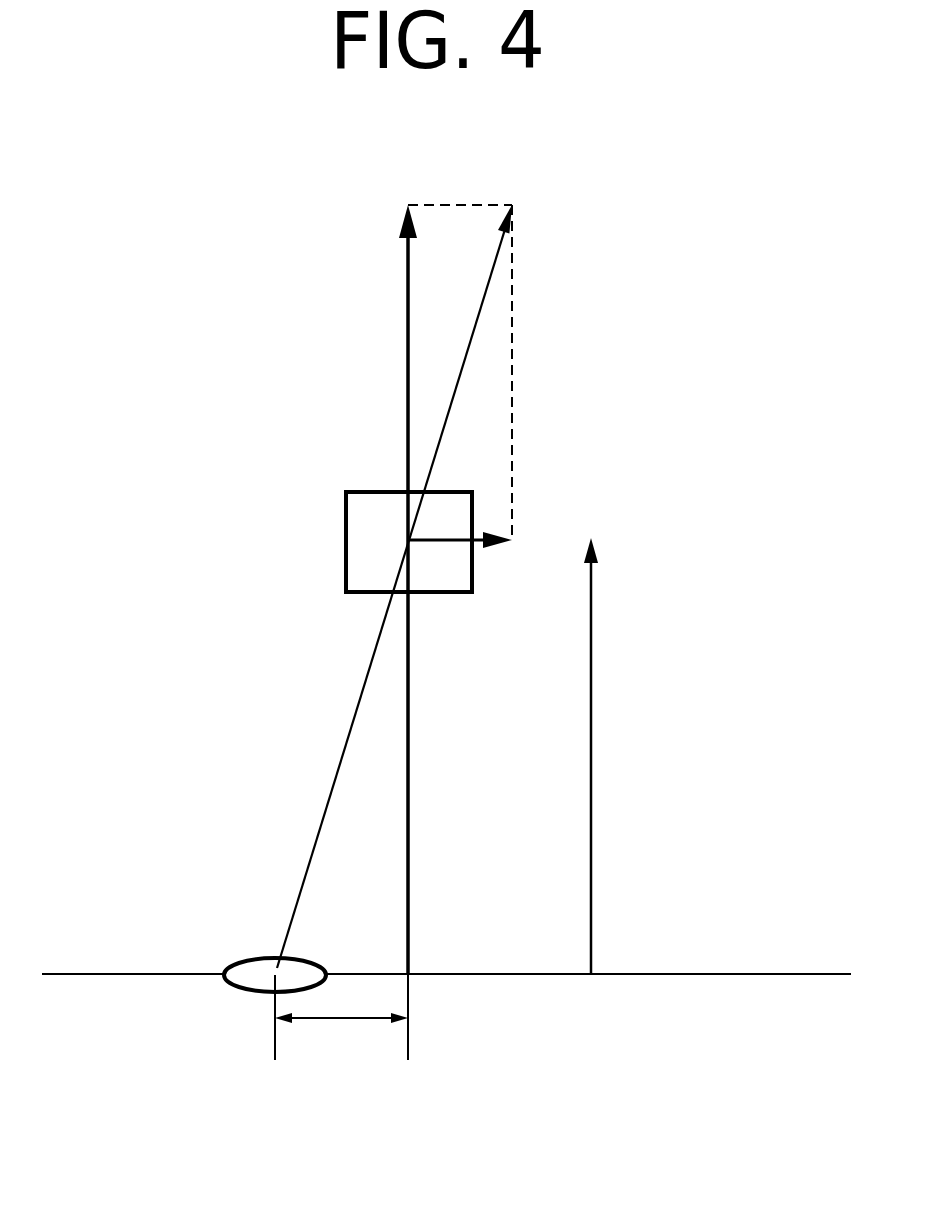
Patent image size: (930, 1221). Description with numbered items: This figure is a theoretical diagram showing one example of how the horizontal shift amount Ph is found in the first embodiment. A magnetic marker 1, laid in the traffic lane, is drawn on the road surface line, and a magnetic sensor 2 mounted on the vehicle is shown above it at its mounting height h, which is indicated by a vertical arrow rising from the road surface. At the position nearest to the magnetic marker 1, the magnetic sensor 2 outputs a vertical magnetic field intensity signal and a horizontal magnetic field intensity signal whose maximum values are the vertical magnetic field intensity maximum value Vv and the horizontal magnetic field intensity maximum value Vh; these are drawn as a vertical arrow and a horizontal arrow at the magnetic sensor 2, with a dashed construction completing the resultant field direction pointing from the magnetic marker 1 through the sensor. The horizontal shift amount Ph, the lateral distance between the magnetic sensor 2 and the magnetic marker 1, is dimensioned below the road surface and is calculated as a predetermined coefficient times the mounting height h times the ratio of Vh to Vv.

The magnetic marker 1 is at (255, 958).
The magnetic sensor 2 is at (346, 541).
The vertical magnetic field intensity maximum value Vv is at (381, 589).
The horizontal magnetic field intensity maximum value Vh is at (468, 564).
The mounting height of the magnetic sensor h is at (608, 756).
The horizontal shift amount Ph is at (341, 1021).